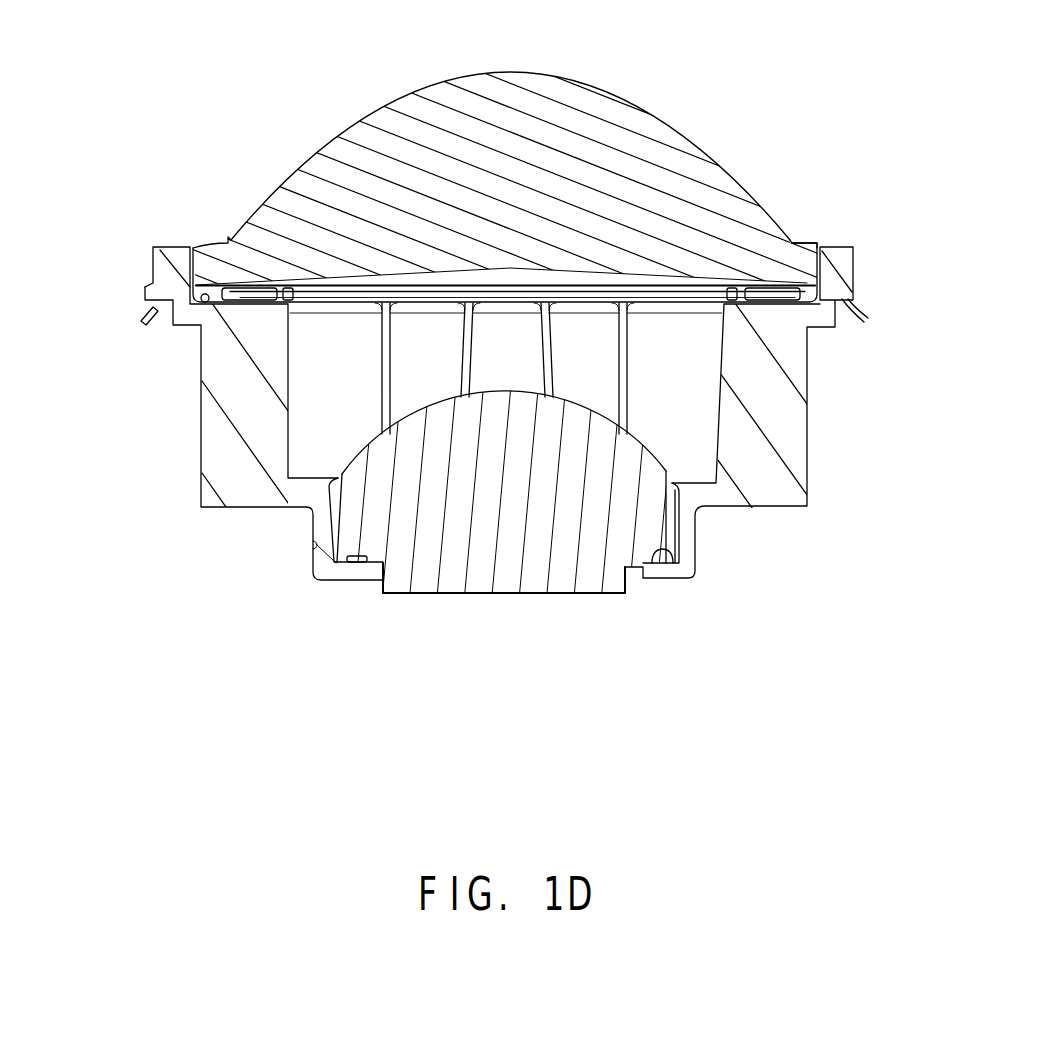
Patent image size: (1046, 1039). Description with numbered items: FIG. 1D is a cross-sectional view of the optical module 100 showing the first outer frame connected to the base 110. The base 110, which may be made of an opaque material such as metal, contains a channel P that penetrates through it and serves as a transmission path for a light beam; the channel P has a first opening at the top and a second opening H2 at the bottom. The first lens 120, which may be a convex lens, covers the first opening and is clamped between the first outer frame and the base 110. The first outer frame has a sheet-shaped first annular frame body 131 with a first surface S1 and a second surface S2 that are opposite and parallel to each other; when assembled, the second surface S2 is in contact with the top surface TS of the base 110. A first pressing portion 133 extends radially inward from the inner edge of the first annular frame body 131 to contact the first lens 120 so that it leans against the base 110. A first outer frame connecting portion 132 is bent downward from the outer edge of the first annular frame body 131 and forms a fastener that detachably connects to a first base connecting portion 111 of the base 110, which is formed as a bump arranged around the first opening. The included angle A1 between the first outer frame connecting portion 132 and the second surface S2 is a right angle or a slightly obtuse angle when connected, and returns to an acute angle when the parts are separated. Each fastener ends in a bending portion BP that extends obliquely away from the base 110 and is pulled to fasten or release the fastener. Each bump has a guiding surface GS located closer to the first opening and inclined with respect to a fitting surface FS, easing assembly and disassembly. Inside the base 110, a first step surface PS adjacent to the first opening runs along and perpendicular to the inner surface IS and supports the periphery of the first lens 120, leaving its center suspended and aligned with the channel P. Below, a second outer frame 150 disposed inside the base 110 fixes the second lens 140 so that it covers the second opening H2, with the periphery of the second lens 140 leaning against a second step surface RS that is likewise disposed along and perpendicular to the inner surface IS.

The optical module 100 is at (908, 735).
The base 110 is at (790, 472).
The first base connecting portion 111 is at (145, 293).
The first lens 120 is at (585, 105).
The first annular frame body 131 is at (820, 260).
The first outer frame connecting portion 132 is at (853, 250).
The first pressing portion 133 is at (797, 243).
The second lens 140 is at (503, 562).
The second outer frame 150 is at (702, 490).
The top surface TS is at (236, 262).
The first surface S1 is at (162, 245).
The second surface S2 is at (172, 264).
The guiding surface GS is at (150, 283).
The fitting surface FS is at (168, 303).
The first step surface PS is at (202, 307).
The channel P is at (364, 389).
The inner surface IS is at (716, 402).
The second step surface RS is at (654, 557).
The second opening H2 is at (628, 571).
The bending portion BP is at (862, 321).
The included angle A1 is at (856, 272).